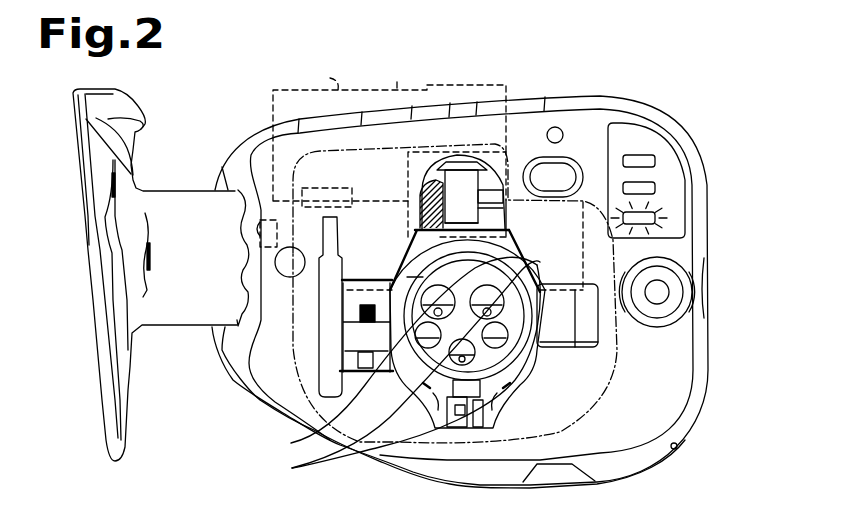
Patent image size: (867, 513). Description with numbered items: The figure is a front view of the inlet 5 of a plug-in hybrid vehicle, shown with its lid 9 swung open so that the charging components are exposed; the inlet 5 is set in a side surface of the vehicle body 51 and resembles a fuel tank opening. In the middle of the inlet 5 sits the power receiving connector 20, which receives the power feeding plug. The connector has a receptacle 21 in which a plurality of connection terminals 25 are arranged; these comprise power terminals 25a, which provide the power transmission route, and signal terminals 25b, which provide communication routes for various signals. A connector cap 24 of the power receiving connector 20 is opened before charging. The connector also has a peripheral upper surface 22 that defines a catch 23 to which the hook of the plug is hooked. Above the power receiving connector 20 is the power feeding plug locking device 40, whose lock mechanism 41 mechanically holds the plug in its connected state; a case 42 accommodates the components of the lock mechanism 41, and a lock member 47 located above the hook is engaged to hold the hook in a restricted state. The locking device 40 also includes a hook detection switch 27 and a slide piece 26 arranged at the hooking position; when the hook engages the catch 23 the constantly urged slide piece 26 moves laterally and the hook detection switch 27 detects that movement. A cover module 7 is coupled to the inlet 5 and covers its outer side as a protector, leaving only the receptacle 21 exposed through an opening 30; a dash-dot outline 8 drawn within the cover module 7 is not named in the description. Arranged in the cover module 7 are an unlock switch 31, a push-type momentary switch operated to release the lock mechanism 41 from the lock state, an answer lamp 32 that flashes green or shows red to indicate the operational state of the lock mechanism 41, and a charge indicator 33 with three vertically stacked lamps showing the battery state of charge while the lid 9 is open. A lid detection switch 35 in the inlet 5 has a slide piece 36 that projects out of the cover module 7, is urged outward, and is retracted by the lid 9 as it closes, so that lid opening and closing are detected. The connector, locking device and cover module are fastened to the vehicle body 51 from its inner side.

The inlet 5 is at (731, 90).
The cover module 7 is at (709, 201).
The housing 8 is at (617, 347).
The lid 9 is at (88, 266).
The power receiving connector 20 is at (480, 292).
The receptacle 21 is at (530, 372).
The peripheral upper surface 22 is at (520, 246).
The catch 23 is at (472, 231).
The connector cap 24 is at (318, 340).
The connection terminals 25 is at (366, 369).
The power terminals 25a is at (388, 356).
The signal terminals 25b is at (238, 430).
The slide piece 26 is at (438, 184).
The hook detection switch 27 is at (353, 199).
The opening 30 is at (515, 381).
The unlock switch 31 is at (572, 163).
The answer lamp 32 is at (555, 127).
The charge indicator 33 is at (673, 153).
The lid detection switch 35 is at (256, 246).
The slide piece 36 is at (290, 277).
The power feeding plug locking device 40 is at (444, 74).
The lock mechanism 41 is at (397, 82).
The case 42 is at (330, 78).
The lock member 47 is at (489, 168).
The vehicle body 51 is at (678, 448).